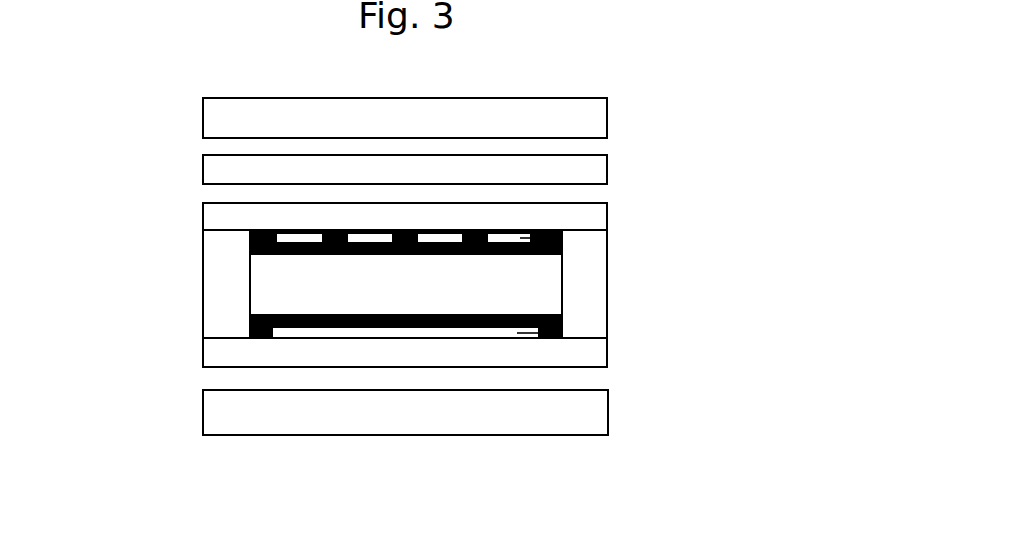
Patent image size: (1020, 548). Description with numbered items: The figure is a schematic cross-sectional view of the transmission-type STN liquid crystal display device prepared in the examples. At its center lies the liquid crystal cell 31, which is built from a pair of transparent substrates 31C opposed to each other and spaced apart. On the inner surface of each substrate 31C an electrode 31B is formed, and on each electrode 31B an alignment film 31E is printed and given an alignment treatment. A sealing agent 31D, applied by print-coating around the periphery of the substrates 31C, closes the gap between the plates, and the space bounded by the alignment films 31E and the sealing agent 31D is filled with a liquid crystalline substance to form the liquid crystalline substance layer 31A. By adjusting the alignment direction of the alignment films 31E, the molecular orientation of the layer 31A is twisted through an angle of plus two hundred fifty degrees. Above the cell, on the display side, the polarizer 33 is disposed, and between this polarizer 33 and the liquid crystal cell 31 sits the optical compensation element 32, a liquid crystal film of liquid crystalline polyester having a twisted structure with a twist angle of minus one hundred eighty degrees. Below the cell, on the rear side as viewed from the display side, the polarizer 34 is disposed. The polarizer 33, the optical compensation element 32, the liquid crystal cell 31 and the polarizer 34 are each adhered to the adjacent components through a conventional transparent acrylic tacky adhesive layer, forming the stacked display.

The liquid crystal cell 31 is at (805, 198).
The liquid crystalline substance layer 31A is at (523, 288).
The electrodes 31B is at (520, 238).
The transparent substrates 31C is at (585, 215).
The sealing agent 31D is at (220, 283).
The alignment films 31E is at (250, 242).
The optical compensation element 32 is at (587, 167).
The polarizer 33 is at (585, 117).
The polarizer 34 is at (585, 418).